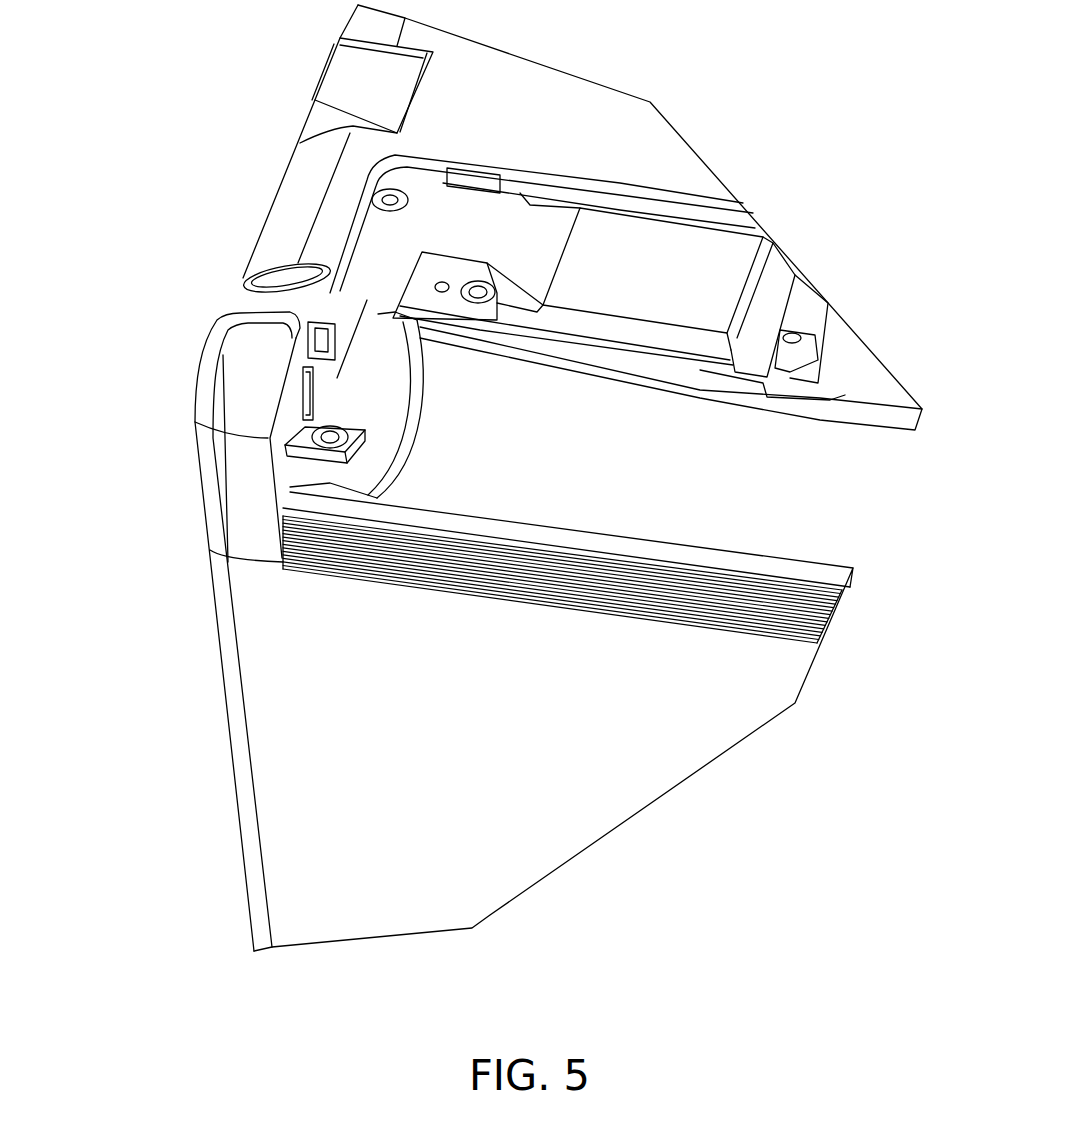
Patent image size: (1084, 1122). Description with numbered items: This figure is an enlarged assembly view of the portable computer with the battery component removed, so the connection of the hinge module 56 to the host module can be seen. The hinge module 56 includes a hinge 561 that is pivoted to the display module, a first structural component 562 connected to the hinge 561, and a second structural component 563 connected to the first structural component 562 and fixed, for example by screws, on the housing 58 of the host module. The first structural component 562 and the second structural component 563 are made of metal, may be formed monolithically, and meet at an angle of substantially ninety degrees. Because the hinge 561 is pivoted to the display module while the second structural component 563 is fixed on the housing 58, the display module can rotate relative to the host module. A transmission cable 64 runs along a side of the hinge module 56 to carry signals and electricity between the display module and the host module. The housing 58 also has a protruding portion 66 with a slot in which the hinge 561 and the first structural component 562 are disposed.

The hinge module 56 is at (215, 334).
The hinge 561 is at (338, 402).
The first structural component 562 is at (372, 377).
The second structural component 563 is at (363, 370).
The housing 58 is at (307, 175).
The transmission cable 64 is at (397, 240).
The protruding portion 66 is at (390, 447).